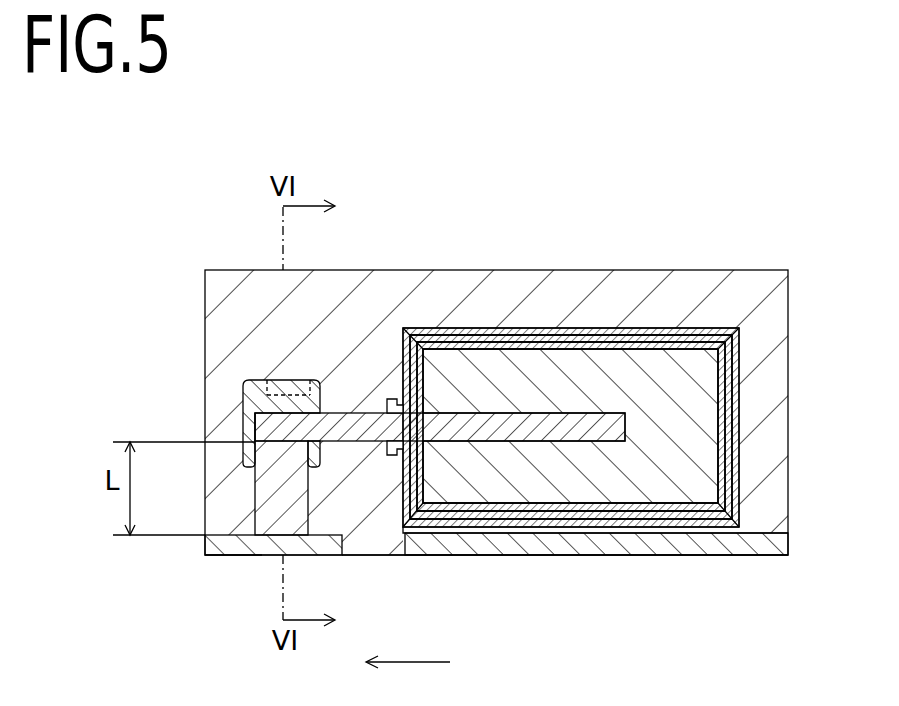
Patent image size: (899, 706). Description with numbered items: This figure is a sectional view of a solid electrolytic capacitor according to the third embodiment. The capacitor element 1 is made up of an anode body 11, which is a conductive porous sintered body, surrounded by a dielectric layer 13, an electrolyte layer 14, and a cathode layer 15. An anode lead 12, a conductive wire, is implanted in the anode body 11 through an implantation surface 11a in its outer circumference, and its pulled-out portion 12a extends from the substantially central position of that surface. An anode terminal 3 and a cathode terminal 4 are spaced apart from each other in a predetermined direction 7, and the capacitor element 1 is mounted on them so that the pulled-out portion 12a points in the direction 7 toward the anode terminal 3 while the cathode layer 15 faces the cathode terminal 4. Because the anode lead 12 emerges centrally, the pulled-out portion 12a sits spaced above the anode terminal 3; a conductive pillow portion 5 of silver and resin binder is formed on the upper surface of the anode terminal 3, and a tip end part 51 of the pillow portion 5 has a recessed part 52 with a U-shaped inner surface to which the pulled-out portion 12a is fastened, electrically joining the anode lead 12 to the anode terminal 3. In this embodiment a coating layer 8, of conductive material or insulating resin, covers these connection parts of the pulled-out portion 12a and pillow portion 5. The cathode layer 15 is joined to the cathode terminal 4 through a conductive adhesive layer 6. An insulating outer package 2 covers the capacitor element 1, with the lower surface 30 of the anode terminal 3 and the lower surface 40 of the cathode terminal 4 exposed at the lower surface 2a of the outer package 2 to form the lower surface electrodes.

The capacitor element 1 is at (730, 177).
The outer package 2 is at (790, 384).
The lower surface of outer package 2a is at (390, 558).
The anode terminal 3 is at (260, 548).
The lower surface of anode terminal 30 is at (223, 558).
The cathode terminal 4 is at (695, 536).
The lower surface of cathode terminal 40 is at (615, 558).
The pillow portion 5 is at (272, 492).
The tip end part of pillow portion 51 is at (293, 390).
The recessed part 52 is at (302, 390).
The conductive adhesive layer 6 is at (534, 540).
The predetermined direction 7 is at (400, 677).
The coating layer 8 is at (247, 408).
The anode body 11 is at (467, 385).
The implantation surface 11a is at (417, 363).
The anode lead 12 is at (532, 425).
The pulled-out portion 12a is at (262, 405).
The dielectric layer 13 is at (597, 342).
The electrolyte layer 14 is at (643, 337).
The cathode layer 15 is at (695, 328).